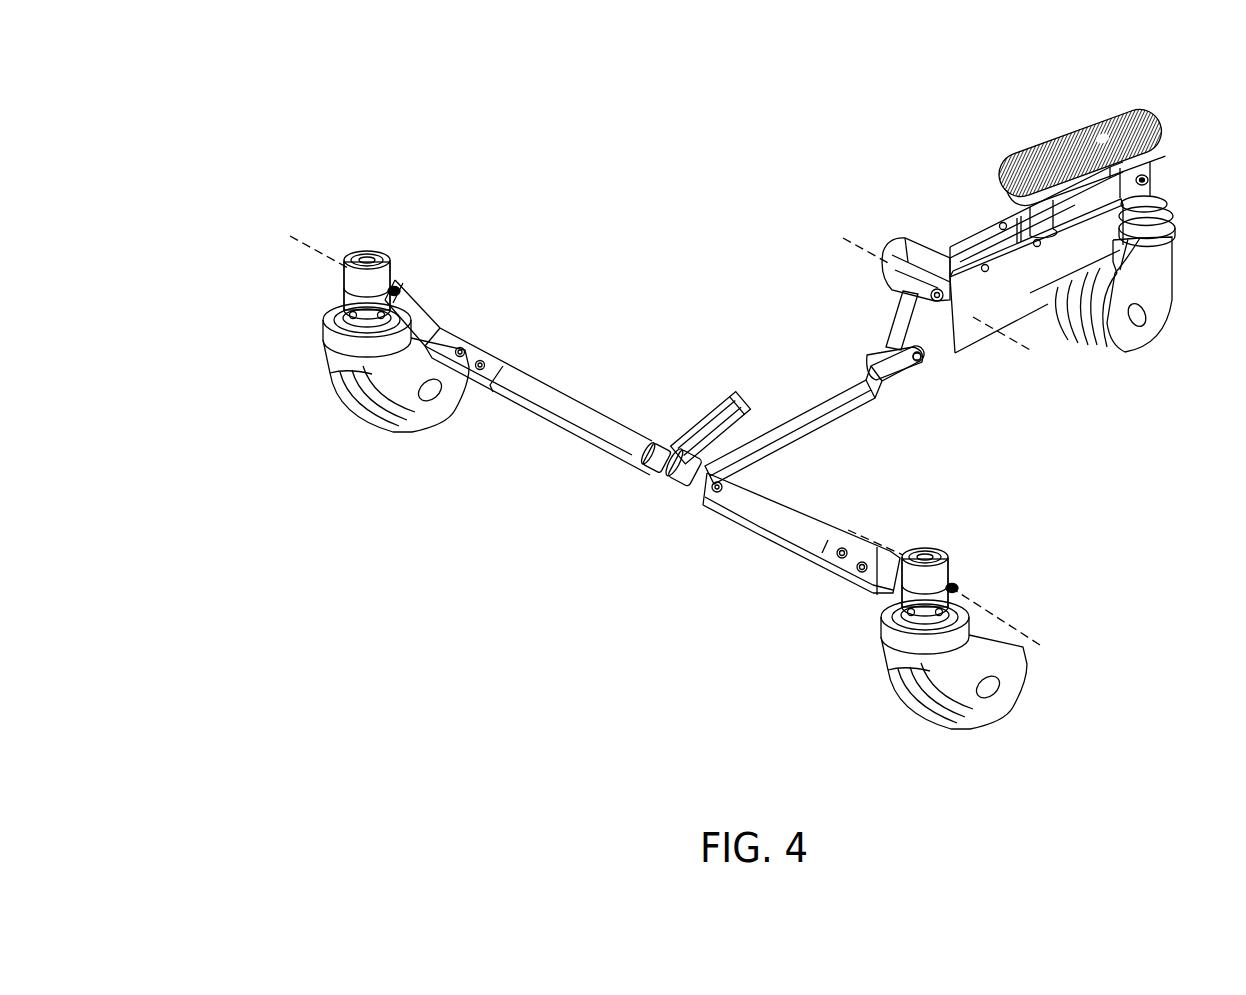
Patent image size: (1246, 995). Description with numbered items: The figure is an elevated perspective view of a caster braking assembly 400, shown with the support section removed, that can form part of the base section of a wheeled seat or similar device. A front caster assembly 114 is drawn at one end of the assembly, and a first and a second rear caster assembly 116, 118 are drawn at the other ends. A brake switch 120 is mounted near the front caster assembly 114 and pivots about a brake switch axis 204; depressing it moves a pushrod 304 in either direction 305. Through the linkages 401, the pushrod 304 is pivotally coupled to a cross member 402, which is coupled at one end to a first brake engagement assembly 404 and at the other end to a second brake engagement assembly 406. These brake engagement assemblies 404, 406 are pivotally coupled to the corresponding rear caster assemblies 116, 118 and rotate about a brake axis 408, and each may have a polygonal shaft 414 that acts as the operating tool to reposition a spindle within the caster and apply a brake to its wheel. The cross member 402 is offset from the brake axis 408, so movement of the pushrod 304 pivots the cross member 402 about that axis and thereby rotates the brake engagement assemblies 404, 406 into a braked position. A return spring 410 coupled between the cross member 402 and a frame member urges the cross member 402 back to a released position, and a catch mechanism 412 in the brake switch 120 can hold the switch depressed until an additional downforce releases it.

The caster braking assembly 400 is at (250, 136).
The linkages 401 is at (759, 364).
The cross member 402 is at (766, 541).
The first brake engagement assembly 404 is at (480, 290).
The second brake engagement assembly 406 is at (884, 545).
The brake axis 408 is at (311, 236).
The return spring 410 is at (704, 414).
The catch mechanism 412 is at (1168, 230).
The polygonal shaft 414 is at (344, 282).
The first rear caster assembly 116 is at (394, 456).
The second rear caster assembly 118 is at (934, 737).
The front caster assembly 114 is at (1118, 370).
The brake switch 120 is at (1088, 120).
The brake switch axis 204 is at (863, 247).
The pushrod 304 is at (843, 412).
The pushrod direction 305 is at (830, 386).